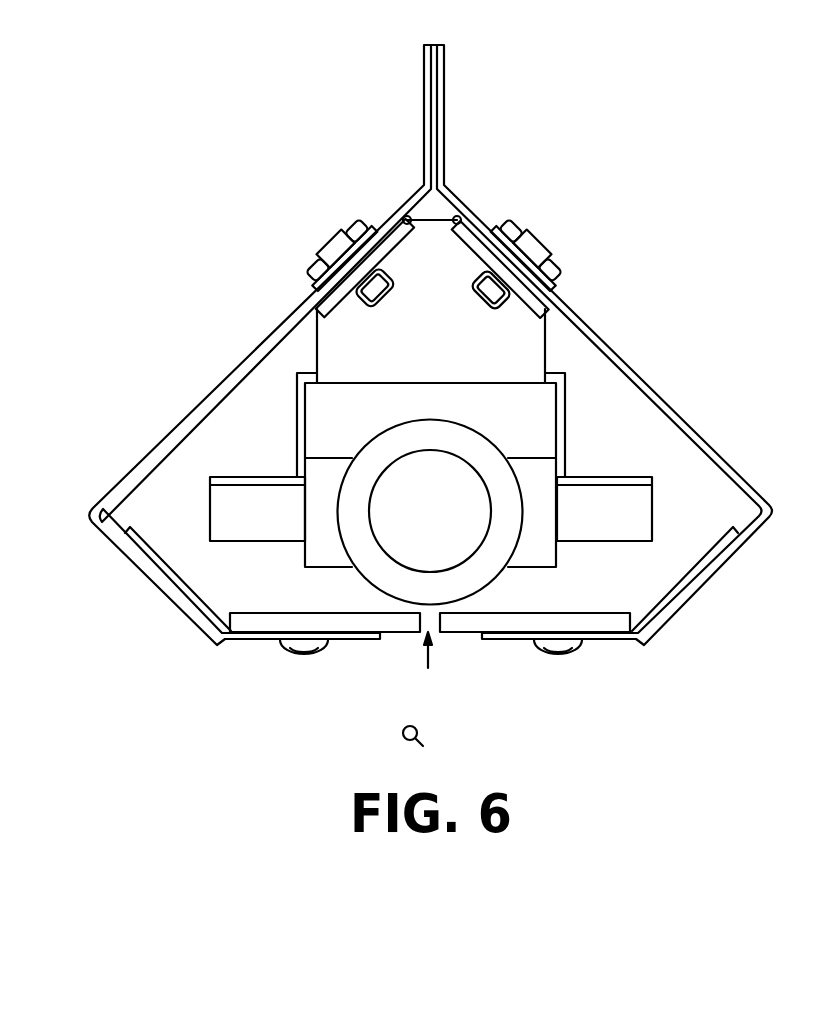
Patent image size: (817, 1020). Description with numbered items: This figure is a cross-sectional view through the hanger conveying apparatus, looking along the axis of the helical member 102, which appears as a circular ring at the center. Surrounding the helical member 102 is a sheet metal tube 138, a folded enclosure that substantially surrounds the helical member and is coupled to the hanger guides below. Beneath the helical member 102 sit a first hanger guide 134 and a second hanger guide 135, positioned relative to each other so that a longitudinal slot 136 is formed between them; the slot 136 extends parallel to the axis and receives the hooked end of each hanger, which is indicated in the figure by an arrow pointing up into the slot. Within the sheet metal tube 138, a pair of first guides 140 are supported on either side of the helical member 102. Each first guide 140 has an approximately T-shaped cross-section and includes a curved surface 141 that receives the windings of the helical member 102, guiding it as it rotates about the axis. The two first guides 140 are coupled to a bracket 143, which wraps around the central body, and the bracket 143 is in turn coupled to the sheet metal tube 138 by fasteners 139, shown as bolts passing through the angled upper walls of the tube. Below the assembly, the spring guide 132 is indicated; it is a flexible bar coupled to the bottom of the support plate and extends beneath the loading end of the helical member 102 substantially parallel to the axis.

The helical member 102 is at (478, 590).
The spring guide 132 is at (438, 746).
The first hanger guide 134 is at (398, 633).
The second hanger guide 135 is at (452, 633).
The longitudinal slot 136 is at (432, 671).
The sheet metal tube 138 is at (448, 186).
The fasteners 139 is at (330, 243).
The first guides 140 is at (210, 508).
The curved surface 141 is at (340, 510).
The bracket 143 is at (566, 442).